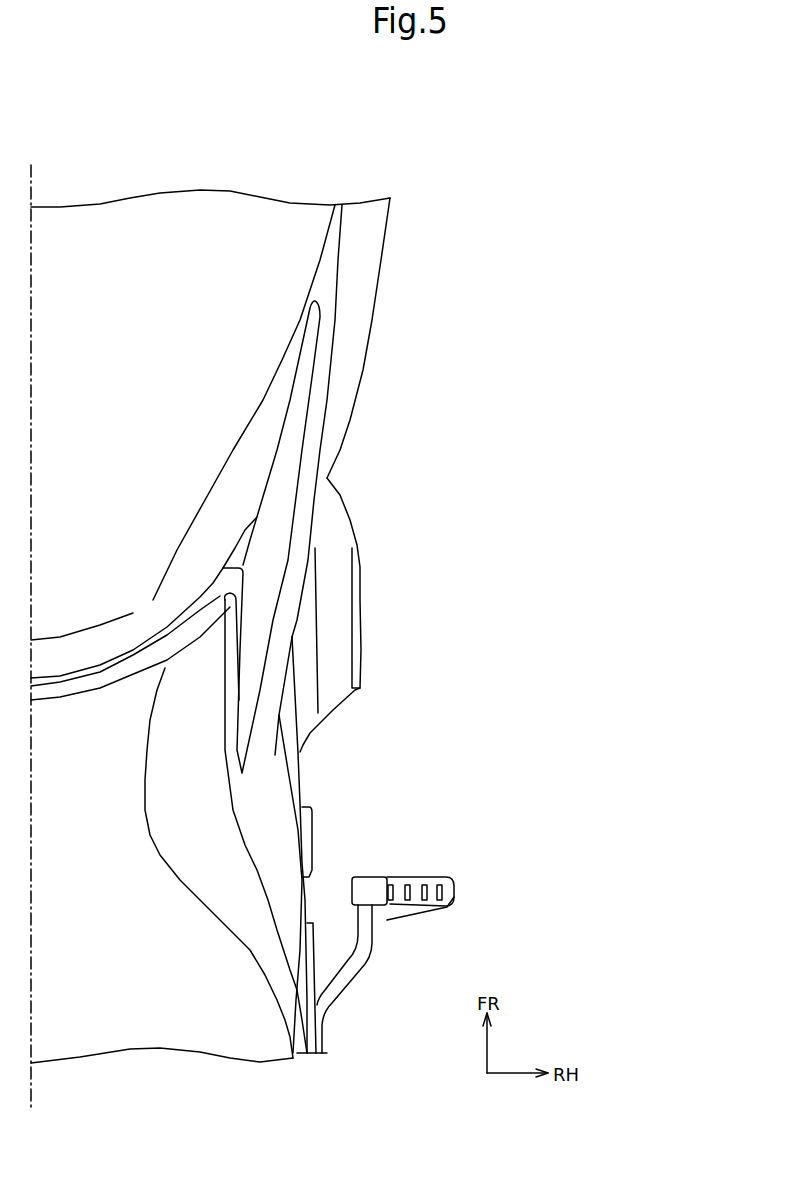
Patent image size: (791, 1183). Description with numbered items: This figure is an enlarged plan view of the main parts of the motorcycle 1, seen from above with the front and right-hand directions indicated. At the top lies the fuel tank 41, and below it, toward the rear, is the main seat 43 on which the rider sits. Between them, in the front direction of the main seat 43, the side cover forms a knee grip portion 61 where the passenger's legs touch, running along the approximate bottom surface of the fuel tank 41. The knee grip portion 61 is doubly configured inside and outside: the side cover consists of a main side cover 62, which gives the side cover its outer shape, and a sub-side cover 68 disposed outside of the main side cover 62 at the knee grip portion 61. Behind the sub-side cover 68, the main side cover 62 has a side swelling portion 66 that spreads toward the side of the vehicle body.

The motorcycle 1 is at (392, 133).
The fuel tank 41 is at (83, 299).
The main seat 43 is at (84, 927).
The knee grip portion 61 is at (300, 423).
The main side cover 62 is at (310, 587).
The side swelling portion 66 is at (278, 832).
The sub-side cover 68 is at (298, 518).